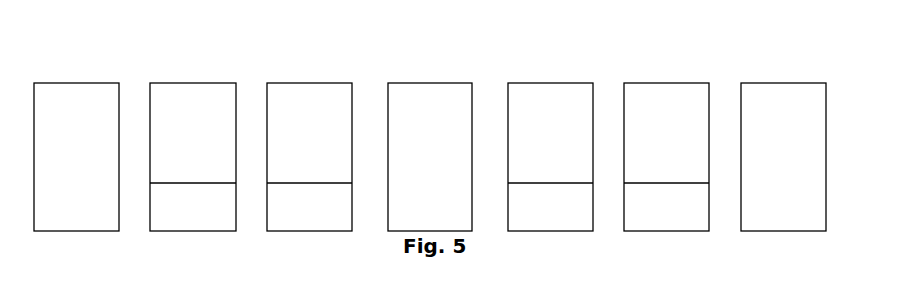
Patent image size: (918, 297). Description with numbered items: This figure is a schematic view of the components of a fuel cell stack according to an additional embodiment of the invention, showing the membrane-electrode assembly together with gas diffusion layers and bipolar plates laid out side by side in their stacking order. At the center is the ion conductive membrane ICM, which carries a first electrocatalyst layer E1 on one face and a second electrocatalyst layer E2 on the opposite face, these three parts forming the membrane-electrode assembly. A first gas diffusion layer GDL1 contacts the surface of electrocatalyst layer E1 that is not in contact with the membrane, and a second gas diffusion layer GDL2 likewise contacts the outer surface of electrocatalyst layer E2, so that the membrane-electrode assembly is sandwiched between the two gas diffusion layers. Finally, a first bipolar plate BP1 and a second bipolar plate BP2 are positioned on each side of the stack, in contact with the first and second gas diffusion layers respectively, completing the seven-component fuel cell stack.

The first bipolar plate BP1 is at (76, 81).
The first gas diffusion layer GDL1 is at (206, 81).
The first electrocatalyst layer E1 is at (318, 77).
The ion conductive membrane ICM is at (430, 62).
The second electrocatalyst layer E2 is at (553, 79).
The second gas diffusion layer GDL2 is at (683, 79).
The second bipolar plate BP2 is at (776, 79).